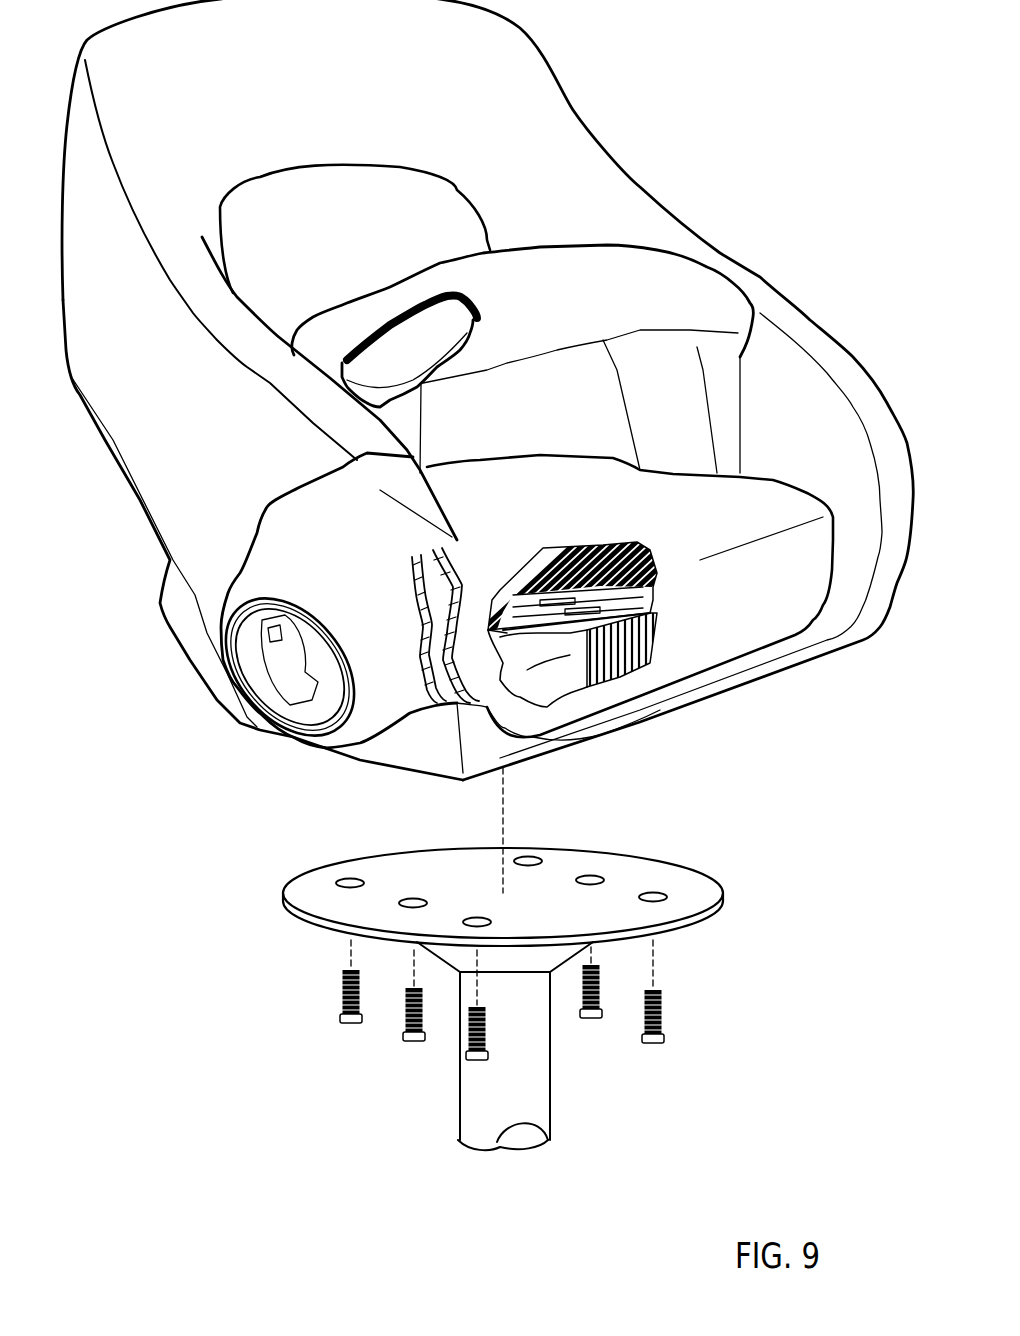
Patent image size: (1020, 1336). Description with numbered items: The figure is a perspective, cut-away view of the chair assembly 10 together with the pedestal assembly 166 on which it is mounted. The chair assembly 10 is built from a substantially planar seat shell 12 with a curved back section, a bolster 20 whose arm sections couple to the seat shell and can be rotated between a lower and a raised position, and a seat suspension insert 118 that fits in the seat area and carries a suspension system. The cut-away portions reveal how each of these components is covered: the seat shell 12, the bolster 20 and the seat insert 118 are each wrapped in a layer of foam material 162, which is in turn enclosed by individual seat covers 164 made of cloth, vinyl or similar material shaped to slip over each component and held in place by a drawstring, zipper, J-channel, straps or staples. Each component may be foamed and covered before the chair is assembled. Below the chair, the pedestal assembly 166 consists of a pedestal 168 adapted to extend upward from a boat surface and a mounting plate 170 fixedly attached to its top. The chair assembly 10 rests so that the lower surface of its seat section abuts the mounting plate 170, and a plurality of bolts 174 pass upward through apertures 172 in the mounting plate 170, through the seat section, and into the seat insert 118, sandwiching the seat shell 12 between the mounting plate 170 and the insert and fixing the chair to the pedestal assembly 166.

The chair assembly 10 is at (652, 135).
The seat shell 12 is at (277, 562).
The bolster 20 is at (413, 340).
The seat suspension insert 118 is at (570, 680).
The layer of foam material 162 is at (363, 340).
The individual seat covers 164 is at (383, 313).
The pedestal assembly 166 is at (573, 1048).
The pedestal 168 is at (550, 1103).
The mounting plate 170 is at (713, 913).
The apertures 172 is at (407, 896).
The bolts 174 is at (342, 1008).